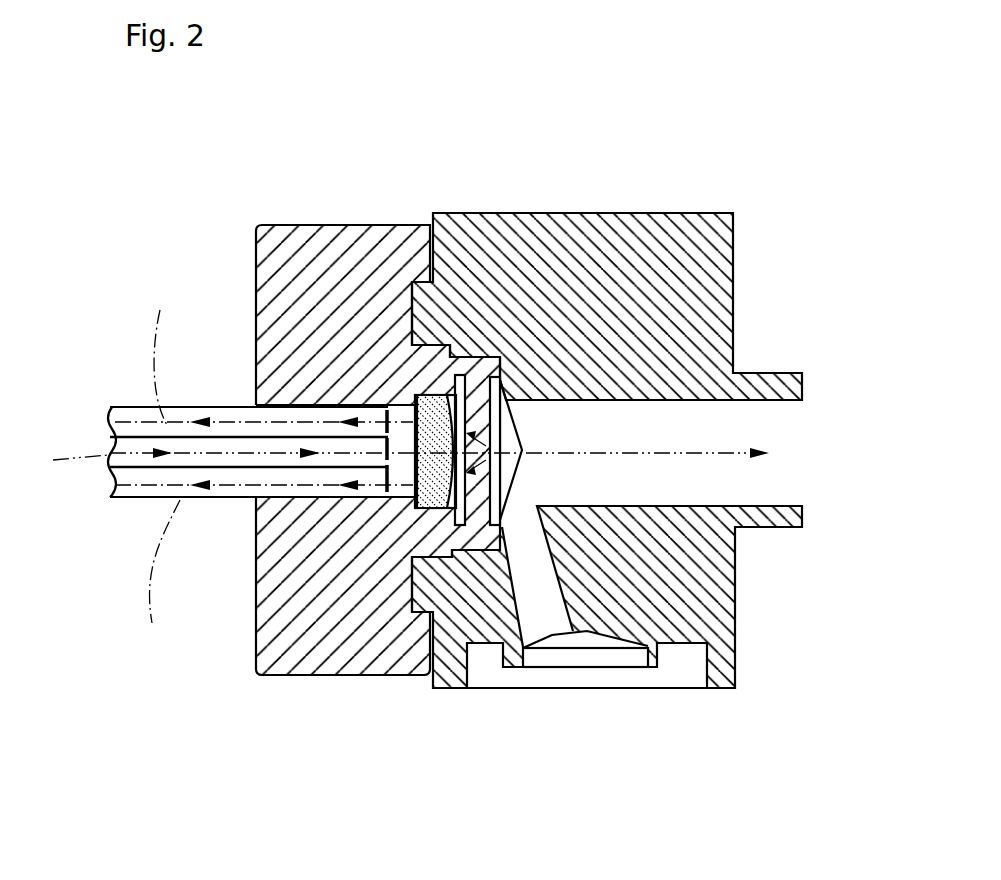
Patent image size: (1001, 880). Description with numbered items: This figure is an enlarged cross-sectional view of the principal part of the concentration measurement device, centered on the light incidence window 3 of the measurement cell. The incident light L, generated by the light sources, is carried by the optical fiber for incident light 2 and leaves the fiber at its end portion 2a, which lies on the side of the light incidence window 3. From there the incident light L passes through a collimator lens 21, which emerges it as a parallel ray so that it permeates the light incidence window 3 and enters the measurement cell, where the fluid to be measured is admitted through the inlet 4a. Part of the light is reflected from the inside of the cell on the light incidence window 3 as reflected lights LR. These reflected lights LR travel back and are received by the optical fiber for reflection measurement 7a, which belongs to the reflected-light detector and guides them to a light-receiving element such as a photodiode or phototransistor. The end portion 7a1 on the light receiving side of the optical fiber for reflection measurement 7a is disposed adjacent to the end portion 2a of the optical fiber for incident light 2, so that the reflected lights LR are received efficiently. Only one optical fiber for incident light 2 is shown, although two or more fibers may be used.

The optical fiber for incident light 2 is at (260, 443).
The end portion of the optical fiber for incident light 2a is at (413, 432).
The collimator lens 21 is at (438, 395).
The light incidence window 3 is at (477, 370).
The inlet 4a is at (552, 635).
The optical fiber for reflection measurement 7a is at (138, 407).
The end portion of the optical fiber for reflection measurement 7a1 is at (394, 472).
The incident light L is at (398, 463).
The reflected lights LR is at (264, 465).